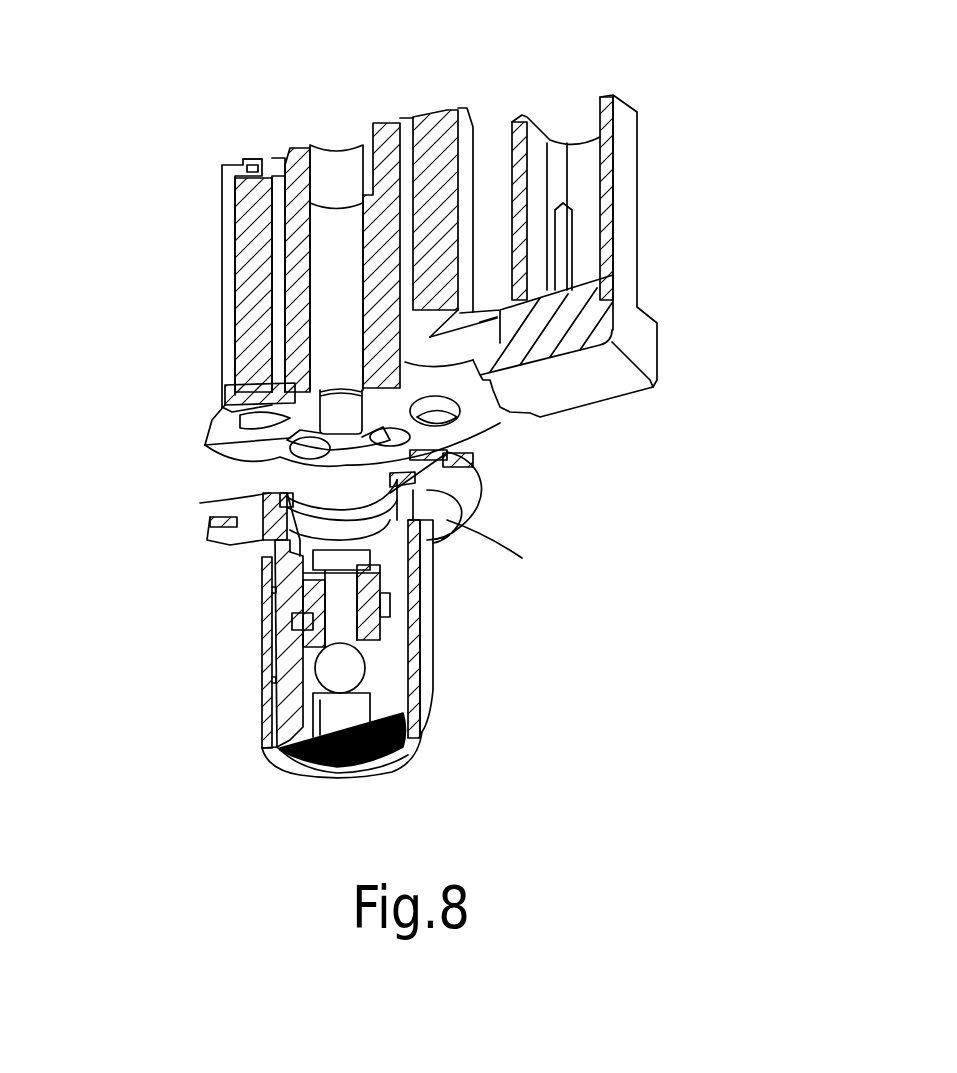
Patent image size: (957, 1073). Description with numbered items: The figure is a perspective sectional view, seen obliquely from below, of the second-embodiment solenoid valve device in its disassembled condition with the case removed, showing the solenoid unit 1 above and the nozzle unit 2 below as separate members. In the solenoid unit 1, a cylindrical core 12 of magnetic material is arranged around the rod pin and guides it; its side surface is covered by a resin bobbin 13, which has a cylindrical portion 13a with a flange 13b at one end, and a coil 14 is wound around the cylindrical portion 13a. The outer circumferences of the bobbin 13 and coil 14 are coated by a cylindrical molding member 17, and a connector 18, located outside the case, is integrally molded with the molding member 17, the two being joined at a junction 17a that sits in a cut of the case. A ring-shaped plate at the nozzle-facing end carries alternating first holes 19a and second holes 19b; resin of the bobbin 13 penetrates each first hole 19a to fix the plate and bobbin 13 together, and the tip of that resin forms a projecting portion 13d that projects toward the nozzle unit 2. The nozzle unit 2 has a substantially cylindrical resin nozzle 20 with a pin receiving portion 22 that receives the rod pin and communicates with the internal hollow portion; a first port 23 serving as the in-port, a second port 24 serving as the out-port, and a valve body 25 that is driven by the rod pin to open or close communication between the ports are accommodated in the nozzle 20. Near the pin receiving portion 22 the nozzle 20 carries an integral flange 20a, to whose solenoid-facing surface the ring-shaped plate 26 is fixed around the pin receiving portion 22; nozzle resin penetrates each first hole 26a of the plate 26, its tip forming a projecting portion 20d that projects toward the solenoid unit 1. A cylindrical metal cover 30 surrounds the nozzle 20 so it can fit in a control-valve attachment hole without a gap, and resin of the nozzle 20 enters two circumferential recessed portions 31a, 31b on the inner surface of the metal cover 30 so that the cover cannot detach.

The solenoid unit 1 is at (660, 115).
The nozzle unit 2 is at (606, 697).
The cylindrical core 12 is at (290, 158).
The bobbin 13 is at (238, 188).
The cylindrical portion 13a is at (252, 280).
The flange 13b is at (245, 173).
The projecting portion 13d is at (473, 415).
The coil 14 is at (433, 162).
The molding member 17 is at (228, 258).
The junction 17a is at (482, 307).
The connector 18 is at (623, 188).
The first holes 19a is at (278, 443).
The second holes 19b is at (227, 410).
The nozzle 20 is at (400, 672).
The flange 20a is at (453, 517).
The projecting portion 20d is at (245, 498).
The pin receiving portion 22 is at (290, 535).
The first port 23 is at (352, 722).
The second port 24 is at (400, 598).
The valve body 25 is at (343, 666).
The plate 26 is at (480, 498).
The first holes 26a is at (300, 538).
The metal cover 30 is at (268, 738).
The recessed portion 31a is at (266, 596).
The recessed portion 31b is at (266, 681).